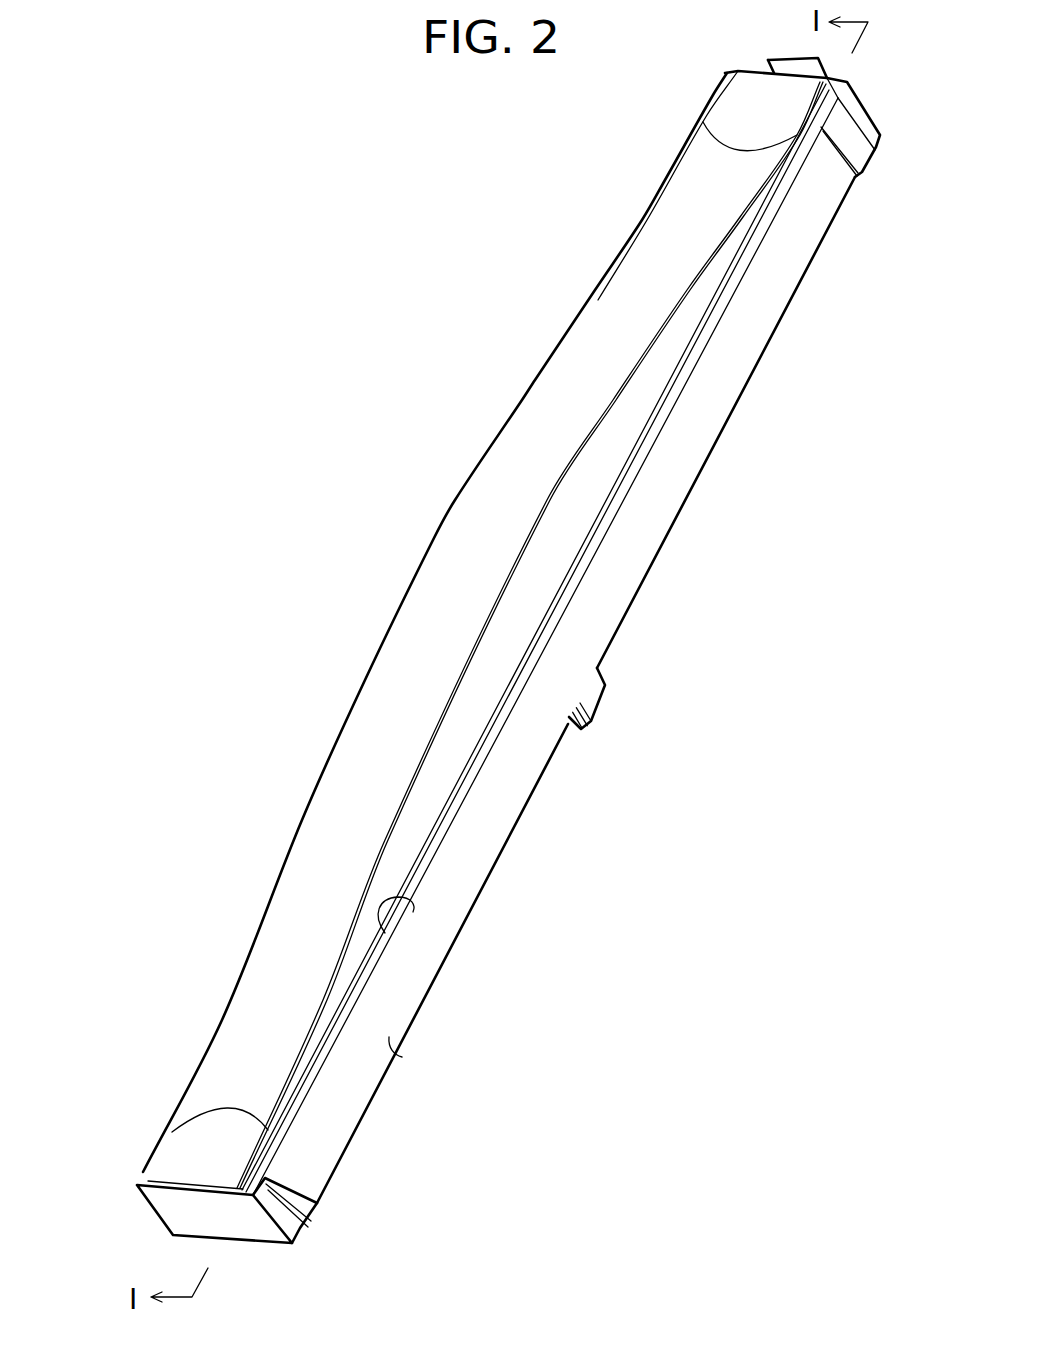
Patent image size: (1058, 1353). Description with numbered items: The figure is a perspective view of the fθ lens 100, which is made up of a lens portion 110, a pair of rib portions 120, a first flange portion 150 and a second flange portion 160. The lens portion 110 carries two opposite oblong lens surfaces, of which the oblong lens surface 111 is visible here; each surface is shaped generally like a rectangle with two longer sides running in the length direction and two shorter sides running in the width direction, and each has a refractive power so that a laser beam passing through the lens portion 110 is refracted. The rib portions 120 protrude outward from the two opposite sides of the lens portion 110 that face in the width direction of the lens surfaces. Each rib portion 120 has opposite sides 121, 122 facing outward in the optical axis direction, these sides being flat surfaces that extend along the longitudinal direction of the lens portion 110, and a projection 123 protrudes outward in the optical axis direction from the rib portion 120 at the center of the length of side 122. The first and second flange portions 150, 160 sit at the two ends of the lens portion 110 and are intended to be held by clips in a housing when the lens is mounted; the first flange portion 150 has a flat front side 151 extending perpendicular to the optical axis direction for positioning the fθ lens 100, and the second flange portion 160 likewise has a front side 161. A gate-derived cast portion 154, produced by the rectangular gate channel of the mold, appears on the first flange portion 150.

The fθ lens 100 is at (476, 245).
The lens portion 110 is at (312, 797).
The oblong lens surface 111 is at (430, 573).
The rib portion 120 is at (467, 857).
The side 121 is at (413, 907).
The side 122 is at (402, 1057).
The projection 123 is at (588, 708).
The first flange portion 150 is at (720, 78).
The front side 151 is at (748, 113).
The gate-derived cast portion 154 is at (773, 60).
The second flange portion 160 is at (138, 1185).
The front side 161 is at (195, 1153).